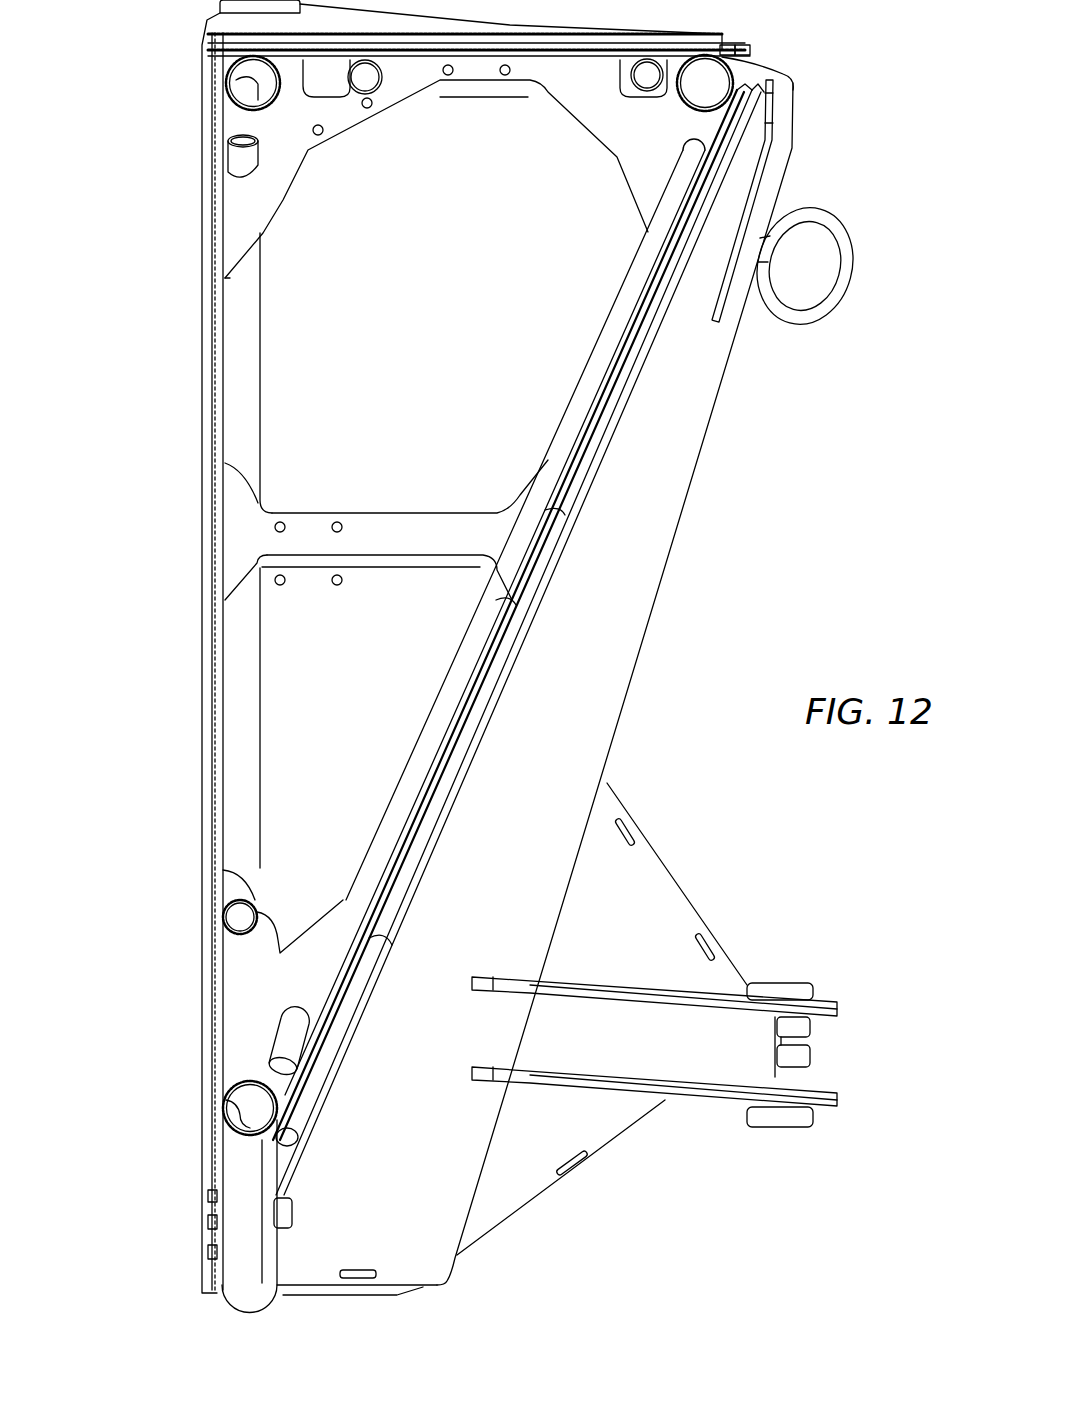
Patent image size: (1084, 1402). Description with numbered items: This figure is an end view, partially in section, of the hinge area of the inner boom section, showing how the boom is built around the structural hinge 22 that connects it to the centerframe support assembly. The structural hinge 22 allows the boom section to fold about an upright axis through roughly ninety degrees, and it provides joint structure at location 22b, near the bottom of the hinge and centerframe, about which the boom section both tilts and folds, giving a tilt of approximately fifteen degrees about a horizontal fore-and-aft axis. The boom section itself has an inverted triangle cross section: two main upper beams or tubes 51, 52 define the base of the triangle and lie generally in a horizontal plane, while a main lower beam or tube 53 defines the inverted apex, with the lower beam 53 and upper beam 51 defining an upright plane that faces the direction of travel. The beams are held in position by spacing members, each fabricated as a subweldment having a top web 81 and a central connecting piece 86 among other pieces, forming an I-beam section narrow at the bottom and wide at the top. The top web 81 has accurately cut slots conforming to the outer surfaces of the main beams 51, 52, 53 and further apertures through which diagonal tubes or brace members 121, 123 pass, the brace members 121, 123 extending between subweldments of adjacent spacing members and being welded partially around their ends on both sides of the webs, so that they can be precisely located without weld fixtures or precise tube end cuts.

The main upper beam or tube 51 is at (230, 76).
The main upper beam or tube 52 is at (712, 95).
The main lower beam or tube 53 is at (228, 1105).
The top web 81 is at (337, 120).
The diagonal tube or brace member 121 is at (250, 352).
The diagonal tube or brace member 123 is at (640, 232).
The central connecting piece 86 is at (430, 587).
The structural hinge 22 is at (752, 562).
The joint structure location 22b is at (752, 1162).